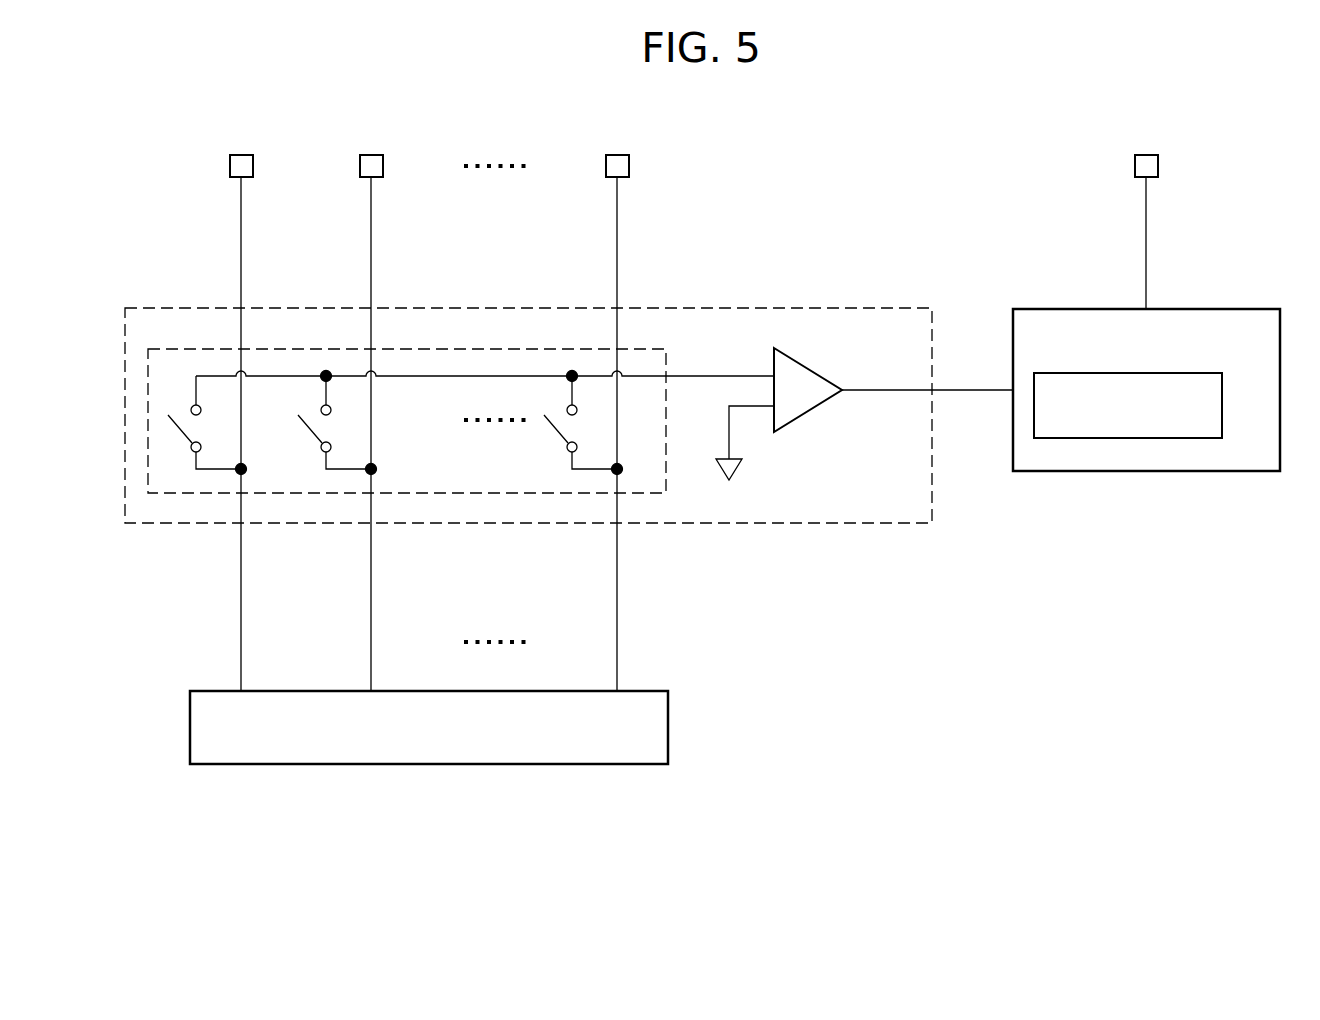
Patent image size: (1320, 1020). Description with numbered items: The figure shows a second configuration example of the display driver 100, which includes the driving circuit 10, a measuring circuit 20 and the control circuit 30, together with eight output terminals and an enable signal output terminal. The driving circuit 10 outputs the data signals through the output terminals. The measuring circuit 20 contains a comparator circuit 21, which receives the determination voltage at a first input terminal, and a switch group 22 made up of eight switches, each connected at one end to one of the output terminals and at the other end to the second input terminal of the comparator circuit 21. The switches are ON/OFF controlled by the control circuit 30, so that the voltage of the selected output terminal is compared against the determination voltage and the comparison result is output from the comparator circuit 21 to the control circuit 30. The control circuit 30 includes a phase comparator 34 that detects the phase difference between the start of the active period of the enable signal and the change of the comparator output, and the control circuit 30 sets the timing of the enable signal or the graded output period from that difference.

The driving circuit 10 is at (668, 727).
The measuring circuit 20 is at (842, 523).
The comparator circuit 21 is at (817, 367).
The switch group 22 is at (666, 351).
The control circuit 30 is at (1219, 309).
The phase comparator 34 is at (1222, 405).
The display driver 100 is at (702, 486).